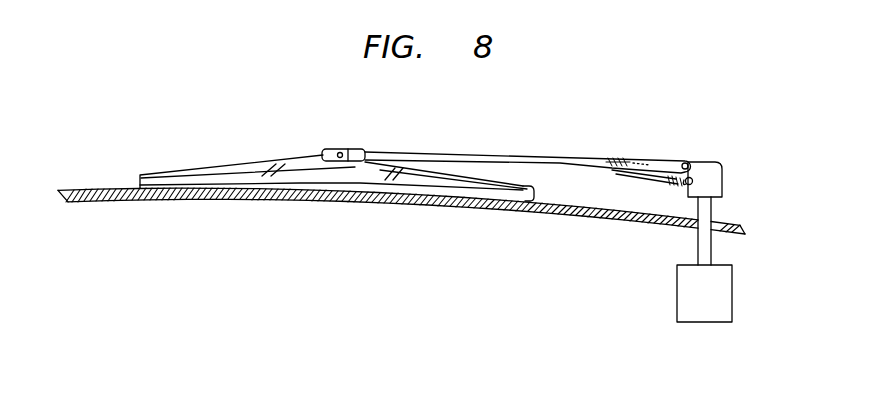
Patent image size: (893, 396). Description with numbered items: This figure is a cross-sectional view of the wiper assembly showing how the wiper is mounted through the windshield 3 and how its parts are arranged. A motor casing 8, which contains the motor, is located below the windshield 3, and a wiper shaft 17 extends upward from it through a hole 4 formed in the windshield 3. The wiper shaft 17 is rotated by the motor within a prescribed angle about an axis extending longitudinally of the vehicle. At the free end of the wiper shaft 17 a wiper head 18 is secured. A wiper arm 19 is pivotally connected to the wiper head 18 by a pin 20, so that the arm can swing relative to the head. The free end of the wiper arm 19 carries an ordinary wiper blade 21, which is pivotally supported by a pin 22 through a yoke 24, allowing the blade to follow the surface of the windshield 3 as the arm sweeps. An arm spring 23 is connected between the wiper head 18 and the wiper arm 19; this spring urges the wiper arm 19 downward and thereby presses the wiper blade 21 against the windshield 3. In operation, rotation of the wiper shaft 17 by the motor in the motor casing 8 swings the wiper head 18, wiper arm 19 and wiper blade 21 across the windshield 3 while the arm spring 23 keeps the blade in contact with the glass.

The windshield 3 is at (592, 220).
The hole 4 is at (717, 221).
The motor casing 8 is at (717, 292).
The wiper shaft 17 is at (698, 247).
The wiper head 18 is at (712, 172).
The wiper arm 19 is at (590, 160).
The pin 20 is at (686, 163).
The wiper blade 21 is at (291, 188).
The pin 22 is at (344, 151).
The arm spring 23 is at (658, 172).
The yoke 24 is at (404, 178).